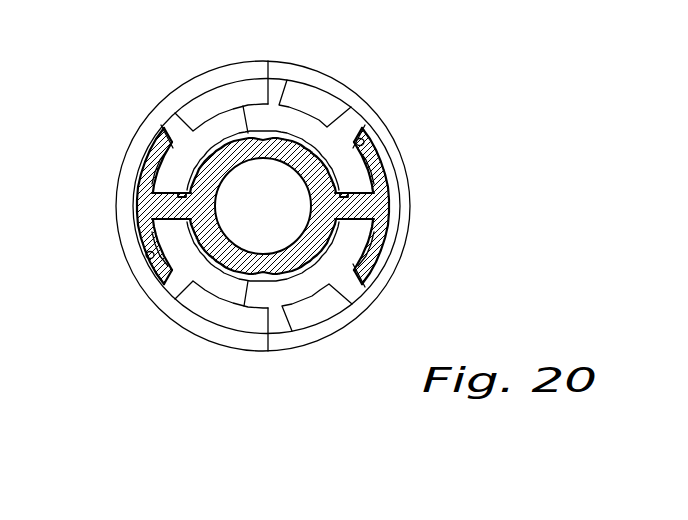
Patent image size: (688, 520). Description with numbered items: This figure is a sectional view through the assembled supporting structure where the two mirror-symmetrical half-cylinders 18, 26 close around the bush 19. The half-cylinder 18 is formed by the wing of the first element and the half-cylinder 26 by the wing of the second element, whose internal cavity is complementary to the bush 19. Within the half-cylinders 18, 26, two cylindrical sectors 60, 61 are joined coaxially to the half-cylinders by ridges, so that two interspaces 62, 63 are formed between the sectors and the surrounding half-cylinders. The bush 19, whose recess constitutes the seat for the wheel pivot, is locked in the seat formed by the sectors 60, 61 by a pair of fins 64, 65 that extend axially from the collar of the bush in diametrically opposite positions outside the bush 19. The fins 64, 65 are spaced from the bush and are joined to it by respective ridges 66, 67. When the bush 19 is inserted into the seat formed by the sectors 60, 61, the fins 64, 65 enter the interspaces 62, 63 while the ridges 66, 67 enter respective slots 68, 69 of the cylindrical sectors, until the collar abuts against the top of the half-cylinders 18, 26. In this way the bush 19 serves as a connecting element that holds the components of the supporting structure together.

The half-cylinder 18 is at (115, 188).
The bush 19 is at (285, 142).
The half-cylinder 26 is at (403, 161).
The cylindrical sector 60 is at (229, 114).
The cylindrical sector 61 is at (310, 282).
The interspace 62 is at (150, 280).
The interspace 63 is at (370, 146).
The fin 64 is at (165, 135).
The fin 65 is at (352, 268).
The ridge 66 is at (178, 190).
The ridge 67 is at (312, 199).
The slot 68 is at (146, 211).
The slot 69 is at (358, 201).